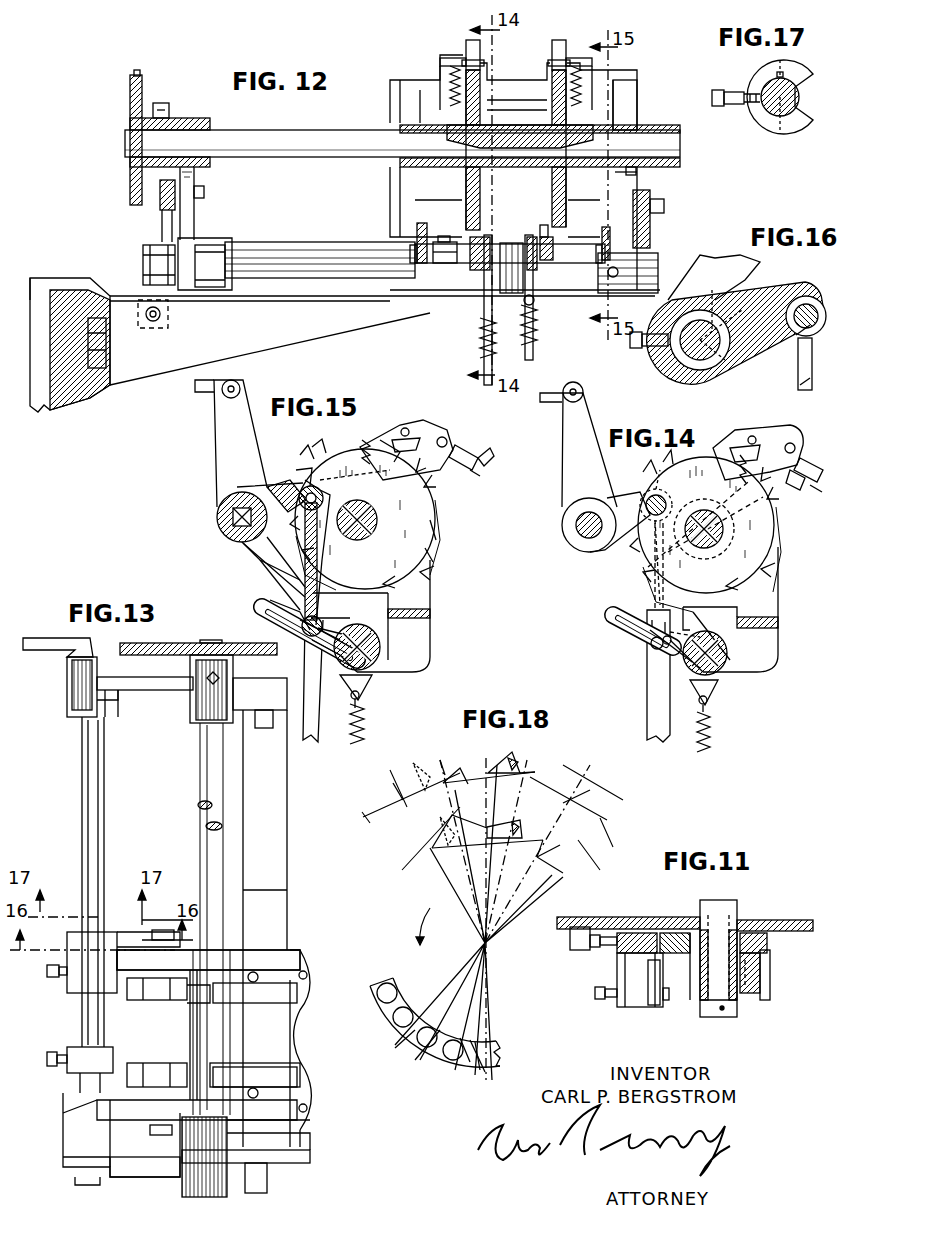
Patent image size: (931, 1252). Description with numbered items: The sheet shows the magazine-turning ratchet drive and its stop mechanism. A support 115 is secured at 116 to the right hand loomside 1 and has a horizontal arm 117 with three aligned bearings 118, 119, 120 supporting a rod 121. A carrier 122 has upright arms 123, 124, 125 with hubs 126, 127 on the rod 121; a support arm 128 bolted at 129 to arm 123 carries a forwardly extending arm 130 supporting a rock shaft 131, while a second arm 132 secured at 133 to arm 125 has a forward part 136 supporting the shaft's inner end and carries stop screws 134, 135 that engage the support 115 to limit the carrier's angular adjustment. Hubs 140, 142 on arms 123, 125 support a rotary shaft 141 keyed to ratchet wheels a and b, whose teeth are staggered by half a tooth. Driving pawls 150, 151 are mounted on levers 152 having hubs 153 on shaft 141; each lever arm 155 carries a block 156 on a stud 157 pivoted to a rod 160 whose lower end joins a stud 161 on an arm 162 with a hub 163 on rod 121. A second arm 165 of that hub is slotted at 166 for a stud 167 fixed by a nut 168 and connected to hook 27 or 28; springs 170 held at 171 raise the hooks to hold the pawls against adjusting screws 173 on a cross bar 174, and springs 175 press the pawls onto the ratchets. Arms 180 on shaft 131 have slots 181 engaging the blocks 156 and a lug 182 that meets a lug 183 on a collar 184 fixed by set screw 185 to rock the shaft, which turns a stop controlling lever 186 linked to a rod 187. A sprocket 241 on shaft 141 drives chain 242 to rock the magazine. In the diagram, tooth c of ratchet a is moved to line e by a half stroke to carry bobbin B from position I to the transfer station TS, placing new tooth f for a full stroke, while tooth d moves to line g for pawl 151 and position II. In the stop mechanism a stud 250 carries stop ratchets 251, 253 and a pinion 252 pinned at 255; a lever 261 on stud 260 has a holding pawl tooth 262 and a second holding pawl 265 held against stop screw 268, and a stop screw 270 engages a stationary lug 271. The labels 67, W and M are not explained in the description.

In FIG. 12, the loomside 1 is at (44, 285).
In FIG. 12, the hook 27 is at (536, 340).
In FIG. 15, the hook 27 is at (318, 735).
In FIG. 12, the hook 28 is at (482, 346).
In FIG. 14, the hook 28 is at (664, 740).
In FIG. 11, the plate 67 is at (625, 917).
In FIG. 12, the support 115 is at (100, 392).
In FIG. 12, the securing point 116 is at (98, 360).
In FIG. 12, the horizontally extending arm 117 is at (328, 320).
In FIG. 12, the bearing 118 is at (512, 242).
In FIG. 14, the bearing 118 is at (690, 665).
In FIG. 12, the bearing 119 is at (410, 258).
In FIG. 12, the bearing 120 is at (212, 280).
In FIG. 12, the rod 121 is at (326, 243).
In FIG. 15, the rod 121 is at (382, 648).
In FIG. 14, the rod 121 is at (725, 665).
In FIG. 13, the rod 121 is at (205, 830).
In FIG. 12, the carrier 122 is at (622, 98).
In FIG. 15, the carrier 122 is at (430, 612).
In FIG. 14, the carrier 122 is at (778, 624).
In FIG. 13, the carrier 122 is at (307, 1133).
In FIG. 12, the upright arm 123 is at (640, 178).
In FIG. 13, the upright arm 123 is at (300, 1153).
In FIG. 12, the upright arm 124 is at (400, 176).
In FIG. 15, the upright arm 124 is at (432, 590).
In FIG. 14, the upright arm 124 is at (770, 610).
In FIG. 13, the upright arm 124 is at (290, 912).
In FIG. 12, the upright arm 125 is at (194, 173).
In FIG. 13, the upright arm 125 is at (275, 700).
In FIG. 12, the hub 126 is at (655, 258).
In FIG. 15, the hub 126 is at (382, 657).
In FIG. 12, the hub 127 is at (190, 240).
In FIG. 12, the support arm 128 is at (651, 232).
In FIG. 13, the support arm 128 is at (162, 1170).
In FIG. 12, the bolt 129 is at (666, 203).
In FIG. 13, the bolt 129 is at (267, 1186).
In FIG. 13, the forwardly extending arm 130 is at (125, 1170).
In FIG. 17, the rock shaft 131 is at (780, 110).
In FIG. 16, the rock shaft 131 is at (690, 355).
In FIG. 15, the rock shaft 131 is at (235, 508).
In FIG. 14, the rock shaft 131 is at (583, 535).
In FIG. 13, the rock shaft 131 is at (95, 800).
In FIG. 12, the second arm 132 is at (160, 230).
In FIG. 15, the second arm 132 is at (265, 563).
In FIG. 13, the second arm 132 is at (175, 680).
In FIG. 12, the securing point 133 is at (196, 192).
In FIG. 13, the securing point 133 is at (264, 720).
In FIG. 12, the stop screw 134 is at (145, 266).
In FIG. 12, the stop screw 135 is at (165, 325).
In FIG. 12, the forwardly extending part 136 is at (160, 195).
In FIG. 15, the forwardly extending part 136 is at (248, 560).
In FIG. 13, the forwardly extending part 136 is at (132, 690).
In FIG. 12, the hub 140 is at (636, 128).
In FIG. 15, the hub 140 is at (372, 537).
In FIG. 13, the hub 140 is at (200, 1133).
In FIG. 12, the rotary shaft 141 is at (305, 130).
In FIG. 15, the rotary shaft 141 is at (362, 540).
In FIG. 14, the rotary shaft 141 is at (712, 545).
In FIG. 13, the rotary shaft 141 is at (206, 796).
In FIG. 12, the hub 142 is at (207, 118).
In FIG. 13, the hub 142 is at (212, 700).
In FIG. 12, the driving pawl 150 is at (475, 46).
In FIG. 14, the driving pawl 150 is at (760, 442).
In FIG. 13, the driving pawl 150 is at (252, 993).
In FIG. 18, the driving pawl 150 is at (500, 768).
In FIG. 12, the driving pawl 151 is at (556, 48).
In FIG. 15, the driving pawl 151 is at (405, 430).
In FIG. 13, the driving pawl 151 is at (268, 1070).
In FIG. 18, the driving pawl 151 is at (512, 826).
In FIG. 15, the lever 152 is at (432, 440).
In FIG. 14, the lever 152 is at (772, 478).
In FIG. 13, the lever 152 is at (265, 962).
In FIG. 12, the hub 153 is at (465, 172).
In FIG. 13, the hub 153 is at (195, 1085).
In FIG. 15, the arm 155 is at (345, 500).
In FIG. 14, the arm 155 is at (692, 550).
In FIG. 13, the arm 155 is at (178, 985).
In FIG. 16, the block 156 is at (795, 345).
In FIG. 14, the block 156 is at (668, 512).
In FIG. 16, the stud 157 is at (808, 296).
In FIG. 15, the stud 157 is at (312, 488).
In FIG. 14, the stud 157 is at (648, 492).
In FIG. 13, the stud 157 is at (168, 925).
In FIG. 12, the rod 160 is at (417, 232).
In FIG. 16, the rod 160 is at (807, 385).
In FIG. 15, the rod 160 is at (320, 560).
In FIG. 14, the rod 160 is at (658, 600).
In FIG. 13, the rod 160 is at (160, 940).
In FIG. 12, the stud 161 is at (420, 275).
In FIG. 15, the stud 161 is at (335, 630).
In FIG. 12, the arm 162 is at (444, 242).
In FIG. 15, the arm 162 is at (354, 700).
In FIG. 14, the arm 162 is at (692, 640).
In FIG. 12, the hub 163 is at (450, 272).
In FIG. 12, the second arm 165 is at (476, 272).
In FIG. 15, the second arm 165 is at (282, 600).
In FIG. 14, the second arm 165 is at (620, 634).
In FIG. 15, the slot 166 is at (266, 612).
In FIG. 14, the slot 166 is at (612, 618).
In FIG. 12, the stud 167 is at (534, 296).
In FIG. 14, the stud 167 is at (652, 650).
In FIG. 12, the nut 168 is at (550, 236).
In FIG. 12, the spring 170 is at (480, 326).
In FIG. 15, the spring 170 is at (368, 715).
In FIG. 14, the spring 170 is at (712, 730).
In FIG. 15, the spring anchorage 171 is at (372, 679).
In FIG. 14, the spring anchorage 171 is at (716, 690).
In FIG. 15, the adjusting screw 173 is at (476, 468).
In FIG. 14, the adjusting screw 173 is at (818, 485).
In FIG. 13, the adjusting screw 173 is at (302, 980).
In FIG. 12, the cross bar 174 is at (510, 95).
In FIG. 15, the cross bar 174 is at (465, 450).
In FIG. 14, the cross bar 174 is at (812, 457).
In FIG. 13, the cross bar 174 is at (306, 1052).
In FIG. 12, the spring 175 is at (455, 70).
In FIG. 15, the spring 175 is at (380, 448).
In FIG. 14, the spring 175 is at (745, 455).
In FIG. 16, the arm 180 is at (745, 305).
In FIG. 15, the arm 180 is at (278, 490).
In FIG. 14, the arm 180 is at (628, 540).
In FIG. 13, the arm 180 is at (130, 968).
In FIG. 16, the slot 181 is at (780, 290).
In FIG. 15, the slot 181 is at (300, 488).
In FIG. 14, the slot 181 is at (650, 560).
In FIG. 17, the lug 182 is at (805, 80).
In FIG. 16, the lug 182 is at (712, 290).
In FIG. 13, the lug 182 is at (105, 957).
In FIG. 17, the lug 183 is at (803, 115).
In FIG. 16, the lug 183 is at (740, 365).
In FIG. 17, the collar 184 is at (766, 120).
In FIG. 13, the collar 184 is at (82, 905).
In FIG. 17, the set screw 185 is at (728, 106).
In FIG. 16, the set screw 185 is at (645, 345).
In FIG. 16, the stop controlling lever 186 is at (705, 262).
In FIG. 15, the stop controlling lever 186 is at (225, 440).
In FIG. 14, the stop controlling lever 186 is at (575, 472).
In FIG. 13, the stop controlling lever 186 is at (75, 705).
In FIG. 15, the forwardly extending rod 187 is at (212, 393).
In FIG. 14, the forwardly extending rod 187 is at (568, 400).
In FIG. 13, the forwardly extending rod 187 is at (40, 645).
In FIG. 12, the sprocket wheel 241 is at (130, 104).
In FIG. 13, the sprocket wheel 241 is at (195, 666).
In FIG. 12, the chain 242 is at (133, 75).
In FIG. 13, the chain 242 is at (150, 645).
In FIG. 11, the stud 250 is at (722, 906).
In FIG. 11, the stop ratchet 251 is at (768, 943).
In FIG. 11, the pinion 252 is at (766, 963).
In FIG. 11, the stop ratchet 253 is at (770, 988).
In FIG. 11, the pin 255 is at (708, 1000).
In FIG. 11, the stud 260 is at (648, 1003).
In FIG. 11, the lever 261 is at (645, 933).
In FIG. 11, the holding pawl tooth 262 is at (672, 933).
In FIG. 11, the second holding pawl 265 is at (668, 998).
In FIG. 11, the stop screw 268 is at (598, 993).
In FIG. 11, the second stop screw 270 is at (598, 945).
In FIG. 11, the stationary lug 271 is at (572, 945).
In FIG. 12, the ratchet wheel a is at (466, 200).
In FIG. 15, the ratchet wheel a is at (438, 530).
In FIG. 14, the ratchet wheel a is at (768, 538).
In FIG. 13, the ratchet wheel a is at (148, 990).
In FIG. 18, the ratchet wheel a is at (580, 798).
In FIG. 12, the ratchet wheel b is at (552, 188).
In FIG. 15, the ratchet wheel b is at (430, 550).
In FIG. 13, the ratchet wheel b is at (148, 1070).
In FIG. 18, the ratchet wheel b is at (552, 840).
In FIG. 18, the tooth c is at (448, 780).
In FIG. 18, the tooth d is at (480, 832).
In FIG. 18, the line e is at (386, 787).
In FIG. 18, the tooth f is at (532, 776).
In FIG. 18, the line g is at (446, 755).
In FIG. 18, the workpiece W is at (400, 985).
In FIG. 18, the bobbin B is at (410, 1005).
In FIG. 18, the magazine M is at (494, 1052).
In FIG. 18, the transfer position TS is at (478, 1066).
In FIG. 18, the position I is at (440, 1045).
In FIG. 18, the position II is at (416, 1038).